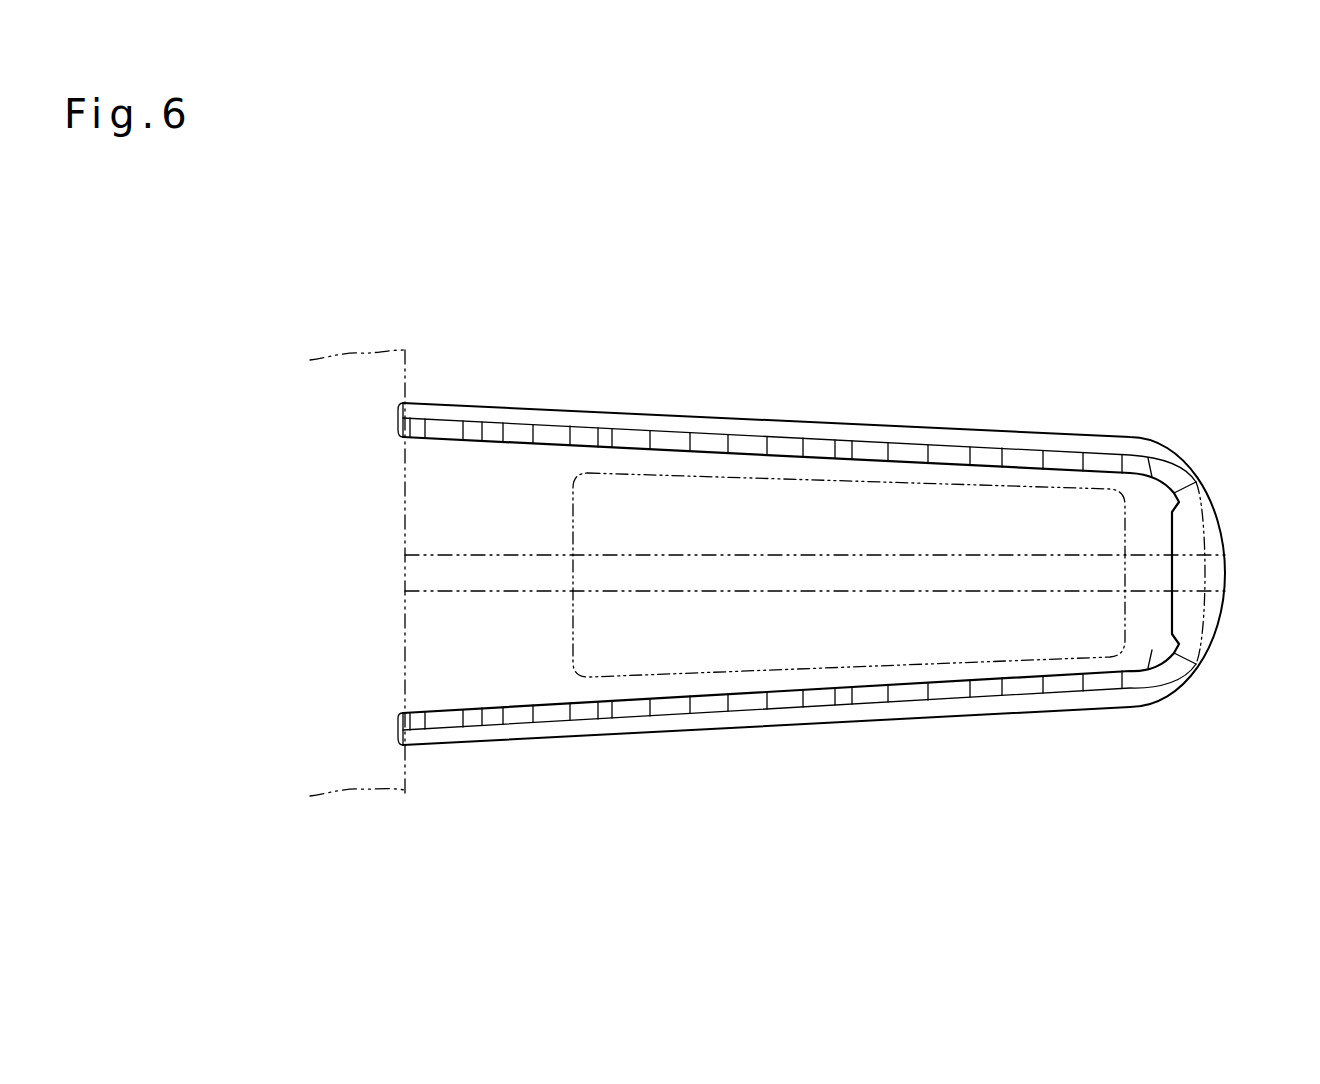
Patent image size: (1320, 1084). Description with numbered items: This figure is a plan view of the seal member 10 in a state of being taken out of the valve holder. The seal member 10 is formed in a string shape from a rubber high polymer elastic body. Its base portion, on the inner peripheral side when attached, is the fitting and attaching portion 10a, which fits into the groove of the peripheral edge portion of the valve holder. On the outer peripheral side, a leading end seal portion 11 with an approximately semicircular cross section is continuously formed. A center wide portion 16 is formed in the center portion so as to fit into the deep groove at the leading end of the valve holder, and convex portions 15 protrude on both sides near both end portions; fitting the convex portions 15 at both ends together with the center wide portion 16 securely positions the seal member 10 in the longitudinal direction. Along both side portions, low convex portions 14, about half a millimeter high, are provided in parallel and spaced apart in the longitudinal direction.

The seal member 10 is at (1006, 418).
The fitting and attaching portion 10a is at (495, 438).
The leading end seal portion 11 is at (843, 423).
The low convex portions 14 is at (990, 452).
The convex portions 15 is at (476, 427).
The center wide portion 16 is at (1196, 537).